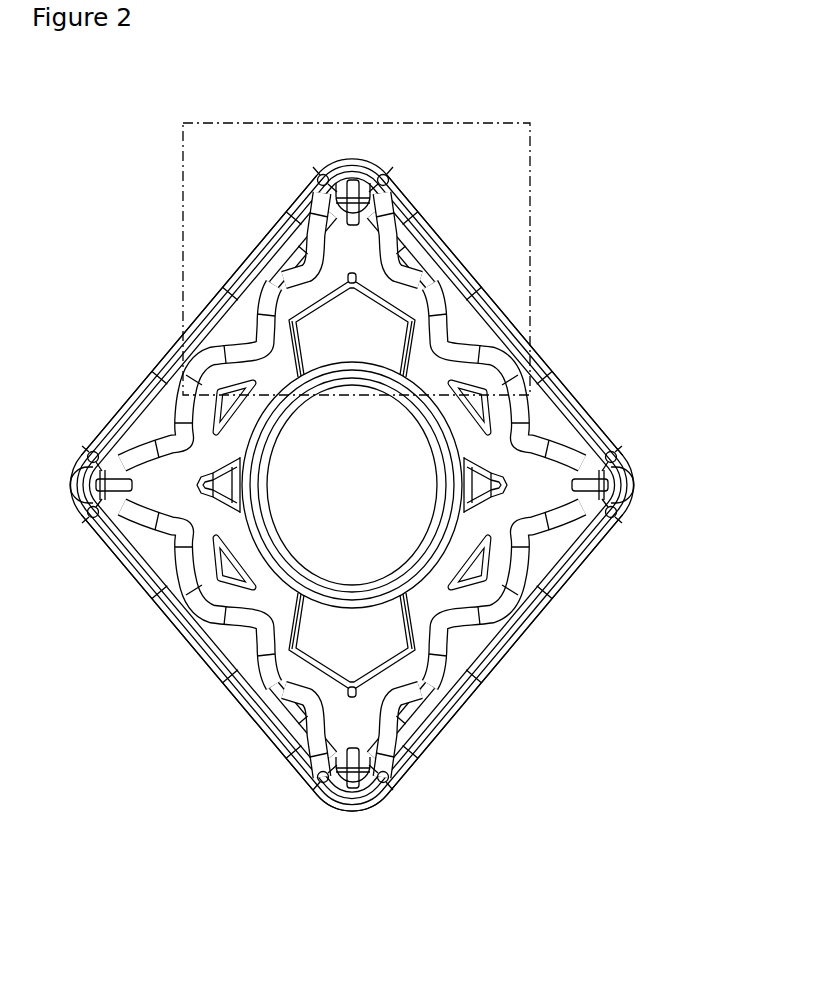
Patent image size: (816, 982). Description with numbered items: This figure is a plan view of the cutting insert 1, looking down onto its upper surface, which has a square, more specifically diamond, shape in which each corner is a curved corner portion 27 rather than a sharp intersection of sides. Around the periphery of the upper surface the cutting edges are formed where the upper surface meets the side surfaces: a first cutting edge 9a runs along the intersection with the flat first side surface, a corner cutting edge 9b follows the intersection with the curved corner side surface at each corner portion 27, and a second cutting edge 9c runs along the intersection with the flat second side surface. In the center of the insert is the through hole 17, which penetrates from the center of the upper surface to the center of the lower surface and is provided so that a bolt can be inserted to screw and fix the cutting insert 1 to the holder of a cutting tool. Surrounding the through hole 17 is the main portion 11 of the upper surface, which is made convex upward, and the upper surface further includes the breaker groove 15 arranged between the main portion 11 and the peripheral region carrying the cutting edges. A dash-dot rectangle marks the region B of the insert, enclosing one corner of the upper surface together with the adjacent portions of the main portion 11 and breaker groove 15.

The cutting insert 1 is at (123, 192).
The enlarged region B is at (378, 124).
The main portion 11 is at (425, 352).
The breaker groove 15 is at (556, 545).
The through hole 17 is at (440, 470).
The first cutting edge 9a is at (584, 426).
The corner cutting edge 9b is at (343, 810).
The second cutting edge 9c is at (173, 427).
The corner portion 27 is at (363, 810).